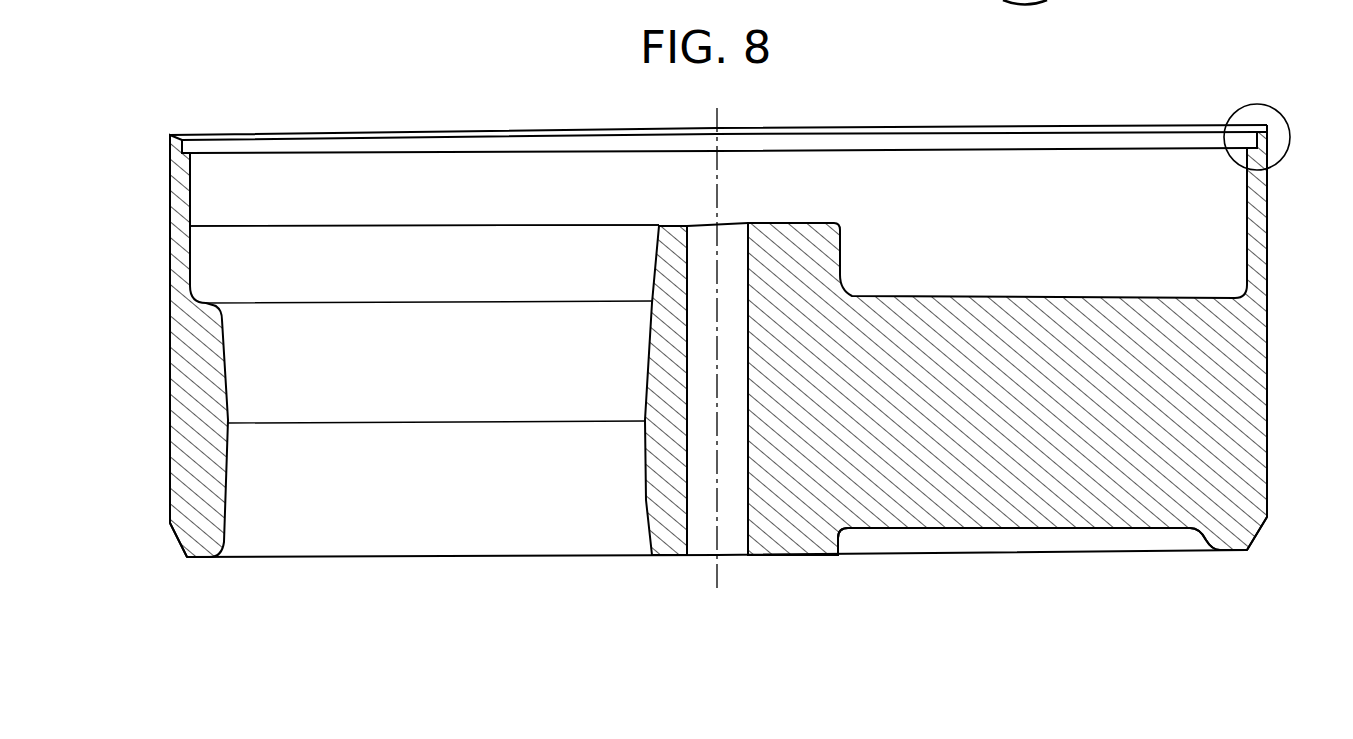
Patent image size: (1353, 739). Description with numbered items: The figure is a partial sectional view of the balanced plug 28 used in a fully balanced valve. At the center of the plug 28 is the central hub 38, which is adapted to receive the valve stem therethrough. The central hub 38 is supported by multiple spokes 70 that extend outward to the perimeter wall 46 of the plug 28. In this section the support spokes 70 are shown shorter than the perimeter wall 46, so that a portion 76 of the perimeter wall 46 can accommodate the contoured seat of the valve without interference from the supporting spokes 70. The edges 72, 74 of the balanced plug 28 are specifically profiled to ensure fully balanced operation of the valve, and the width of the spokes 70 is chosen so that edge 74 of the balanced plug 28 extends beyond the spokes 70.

The balanced plug 28 is at (907, 97).
The central hub 38 is at (786, 545).
The perimeter wall 46 is at (170, 408).
The spokes 70 is at (1012, 482).
The edge 72 is at (170, 135).
The edge 74 is at (198, 560).
The portion of perimeter wall 76 is at (190, 205).